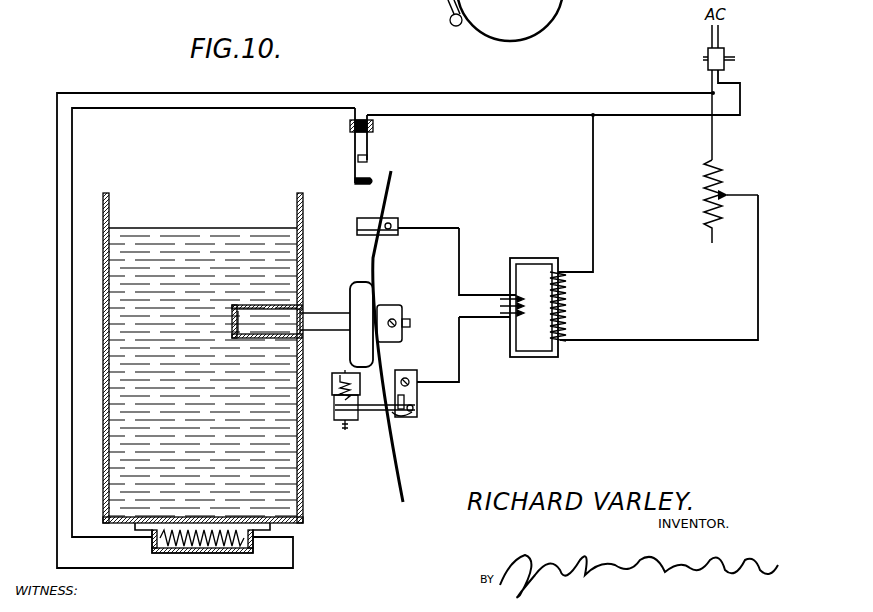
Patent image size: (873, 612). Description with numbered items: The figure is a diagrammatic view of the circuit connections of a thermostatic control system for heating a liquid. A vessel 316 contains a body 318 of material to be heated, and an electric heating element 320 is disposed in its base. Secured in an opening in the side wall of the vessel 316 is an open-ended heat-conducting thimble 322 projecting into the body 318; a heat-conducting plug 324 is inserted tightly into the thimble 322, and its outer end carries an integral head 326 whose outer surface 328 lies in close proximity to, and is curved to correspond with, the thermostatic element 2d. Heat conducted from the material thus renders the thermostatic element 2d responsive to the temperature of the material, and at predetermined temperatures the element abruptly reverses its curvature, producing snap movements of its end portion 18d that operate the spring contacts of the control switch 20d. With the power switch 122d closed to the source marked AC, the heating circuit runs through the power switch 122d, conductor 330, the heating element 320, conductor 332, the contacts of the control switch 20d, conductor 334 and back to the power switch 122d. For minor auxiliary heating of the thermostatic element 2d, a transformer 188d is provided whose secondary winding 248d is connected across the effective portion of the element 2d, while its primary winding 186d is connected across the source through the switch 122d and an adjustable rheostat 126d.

The conductor 330 is at (485, 93).
The conductor 332 is at (72, 166).
The conductor 334 is at (505, 113).
The control switch 20d is at (372, 128).
The end portion 18d is at (392, 185).
The thermostatic element 2d is at (376, 258).
The power switch 122d is at (722, 58).
The adjustable rheostat 126d is at (718, 192).
The transformer 188d is at (522, 258).
The primary winding 186d is at (566, 304).
The secondary winding 248d is at (505, 307).
The vessel 316 is at (303, 462).
The body of material 318 is at (175, 228).
The thimble 322 is at (245, 305).
The plug 324 is at (318, 313).
The head 326 is at (352, 350).
The outer surface 328 is at (376, 302).
The electric heating element 320 is at (225, 548).